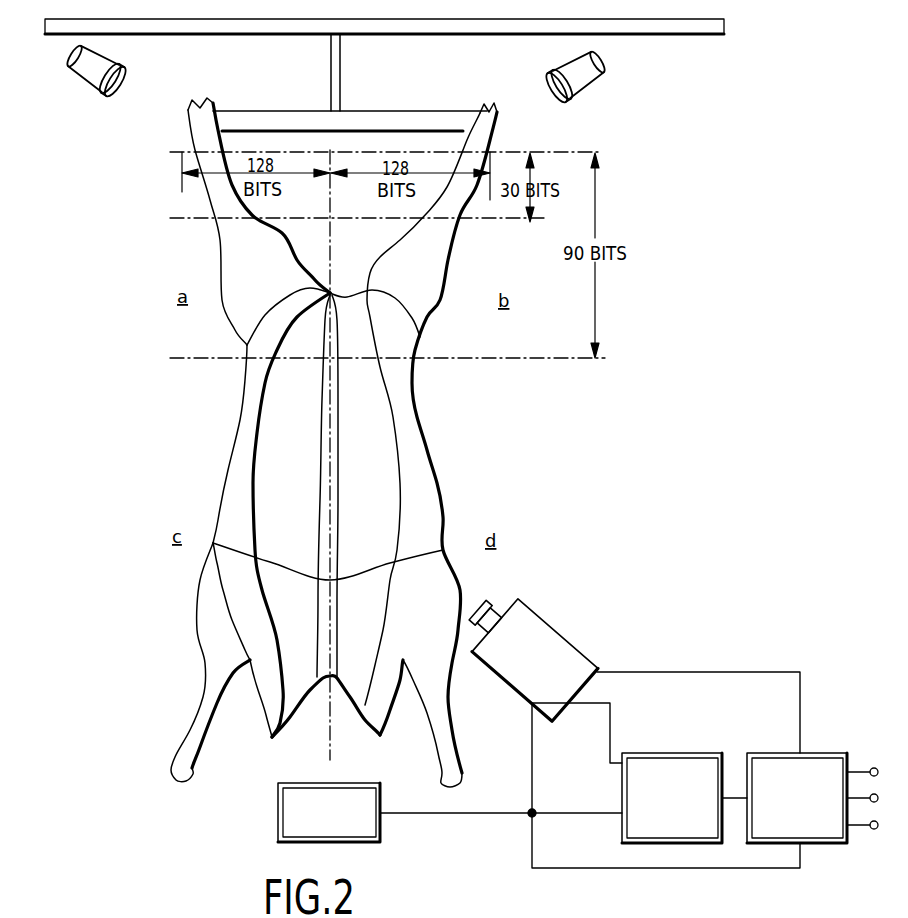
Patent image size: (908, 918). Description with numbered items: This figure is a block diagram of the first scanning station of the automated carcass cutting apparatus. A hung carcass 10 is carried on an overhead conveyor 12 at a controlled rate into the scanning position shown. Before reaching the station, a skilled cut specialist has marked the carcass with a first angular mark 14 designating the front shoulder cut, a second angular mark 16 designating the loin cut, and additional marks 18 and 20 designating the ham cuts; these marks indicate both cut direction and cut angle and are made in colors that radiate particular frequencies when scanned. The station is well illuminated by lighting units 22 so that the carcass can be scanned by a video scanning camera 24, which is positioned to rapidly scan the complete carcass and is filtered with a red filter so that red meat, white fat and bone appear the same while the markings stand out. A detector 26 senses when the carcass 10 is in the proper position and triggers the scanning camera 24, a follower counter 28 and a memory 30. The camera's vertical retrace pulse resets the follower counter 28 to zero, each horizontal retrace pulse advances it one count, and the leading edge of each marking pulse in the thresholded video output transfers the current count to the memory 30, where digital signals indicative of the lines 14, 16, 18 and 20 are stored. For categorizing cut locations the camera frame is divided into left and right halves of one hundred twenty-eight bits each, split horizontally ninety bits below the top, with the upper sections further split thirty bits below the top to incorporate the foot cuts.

The carcass 10 is at (432, 439).
The overhead conveyor 12 is at (372, 32).
The first angular mark 14 is at (422, 552).
The second angular mark 16 is at (408, 312).
The ham cut mark 18 is at (440, 198).
The ham cut mark 20 is at (233, 190).
The lighting units 22 is at (128, 75).
The video scanning camera 24 is at (548, 647).
The detector 26 is at (384, 840).
The follower counter 28 is at (622, 826).
The memory 30 is at (822, 760).